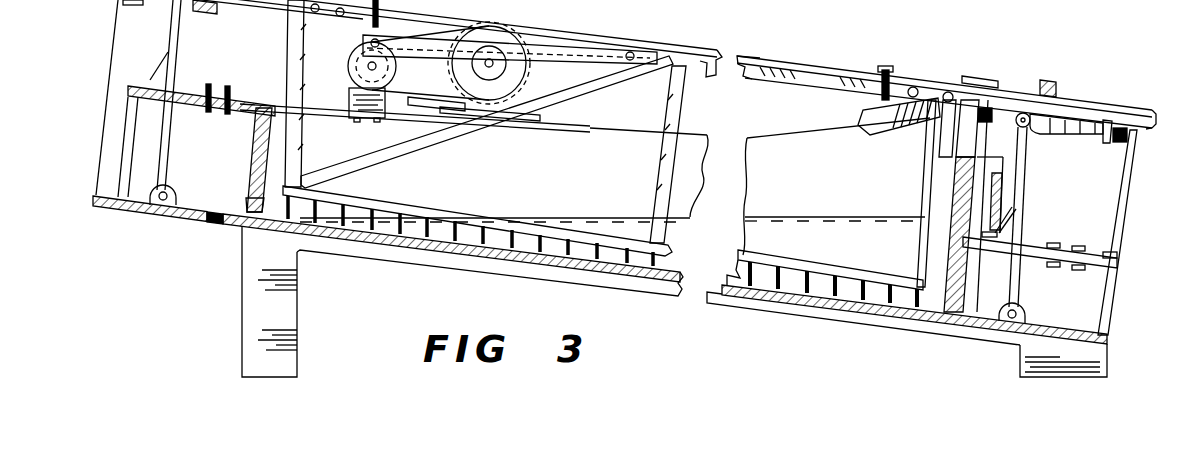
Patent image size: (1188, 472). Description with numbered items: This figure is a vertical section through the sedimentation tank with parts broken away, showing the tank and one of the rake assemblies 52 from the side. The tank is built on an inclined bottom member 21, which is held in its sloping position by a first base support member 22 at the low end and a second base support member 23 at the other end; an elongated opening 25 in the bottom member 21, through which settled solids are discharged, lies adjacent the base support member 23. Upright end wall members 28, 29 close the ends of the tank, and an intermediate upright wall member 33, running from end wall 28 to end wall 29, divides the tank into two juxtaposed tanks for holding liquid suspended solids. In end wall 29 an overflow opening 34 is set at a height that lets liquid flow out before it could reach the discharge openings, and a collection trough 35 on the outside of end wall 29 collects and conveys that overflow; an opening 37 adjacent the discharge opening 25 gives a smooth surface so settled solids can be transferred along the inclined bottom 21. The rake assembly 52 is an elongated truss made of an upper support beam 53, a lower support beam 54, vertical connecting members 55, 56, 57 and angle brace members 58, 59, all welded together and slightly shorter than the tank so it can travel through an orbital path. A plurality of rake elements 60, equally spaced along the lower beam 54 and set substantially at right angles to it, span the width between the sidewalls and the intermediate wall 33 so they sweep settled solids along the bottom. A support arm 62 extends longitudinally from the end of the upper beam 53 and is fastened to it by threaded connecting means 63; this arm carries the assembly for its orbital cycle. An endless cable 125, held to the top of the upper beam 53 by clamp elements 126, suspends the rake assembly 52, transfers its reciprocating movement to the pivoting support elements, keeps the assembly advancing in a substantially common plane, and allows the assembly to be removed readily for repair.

The bottom member 21 is at (851, 297).
The first base support member 22 is at (1108, 356).
The second base support member 23 is at (291, 309).
The elongated opening 25 is at (213, 223).
The end wall member 28 is at (253, 158).
The end wall member 29 is at (962, 267).
The intermediate upright wall member 33 is at (810, 188).
The overflow opening 34 is at (958, 202).
The collection trough 35 is at (996, 176).
The opening 37 is at (247, 199).
The rake assembly 52 is at (787, 74).
The upper support beam 53 is at (801, 74).
The lower support beam 54 is at (474, 210).
The vertical connecting member 55 is at (287, 60).
The vertical connecting member 56 is at (674, 124).
The vertical connecting member 57 is at (928, 160).
The angle brace member 58 is at (493, 122).
The angle brace member 59 is at (880, 116).
The rake element 60 is at (386, 216).
The support arm 62 is at (943, 92).
The threaded connecting means 63 is at (912, 87).
The endless cable 125 is at (952, 78).
The clamp element 126 is at (884, 70).